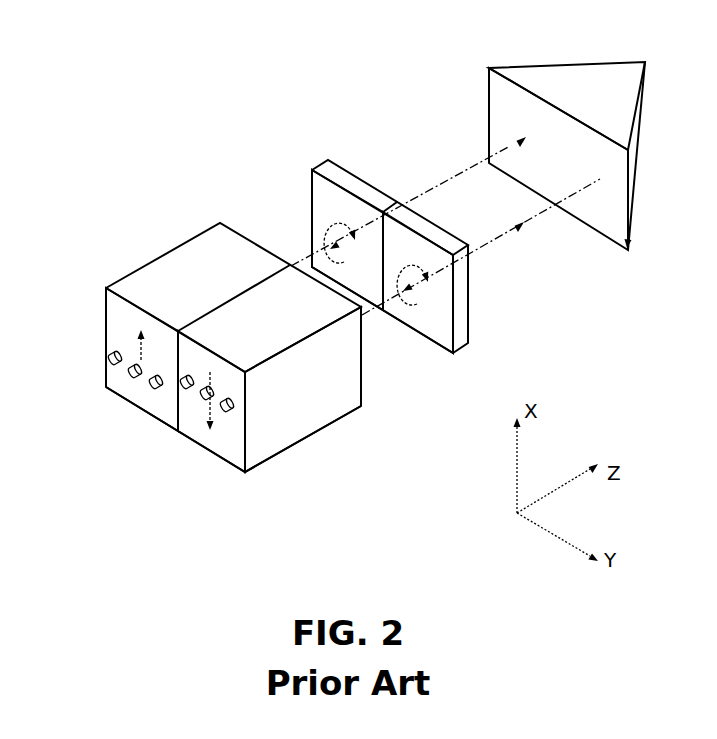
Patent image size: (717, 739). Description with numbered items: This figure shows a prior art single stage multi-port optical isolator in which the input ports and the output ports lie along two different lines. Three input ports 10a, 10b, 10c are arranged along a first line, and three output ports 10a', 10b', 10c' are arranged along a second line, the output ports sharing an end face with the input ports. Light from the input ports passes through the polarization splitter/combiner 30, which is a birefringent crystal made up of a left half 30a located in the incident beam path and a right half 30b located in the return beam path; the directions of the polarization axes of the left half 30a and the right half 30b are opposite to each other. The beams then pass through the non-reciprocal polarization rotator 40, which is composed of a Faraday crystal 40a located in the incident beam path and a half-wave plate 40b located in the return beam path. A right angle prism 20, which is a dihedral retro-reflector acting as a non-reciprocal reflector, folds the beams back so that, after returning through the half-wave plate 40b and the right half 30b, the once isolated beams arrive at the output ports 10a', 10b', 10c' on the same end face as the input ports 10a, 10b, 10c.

The input port 10a is at (78, 323).
The input port 10b is at (115, 303).
The input port 10c is at (120, 419).
The output port 10a' is at (288, 439).
The output port 10b' is at (228, 462).
The output port 10c' is at (168, 445).
The polarization splitter/combiner 30 is at (200, 222).
The left half 30a is at (167, 268).
The right half 30b is at (340, 393).
The non-reciprocal polarization rotator 40 is at (343, 139).
The Faraday crystal 40a is at (330, 210).
The half-wave plate 40b is at (435, 302).
The right angle prism 20 is at (629, 252).